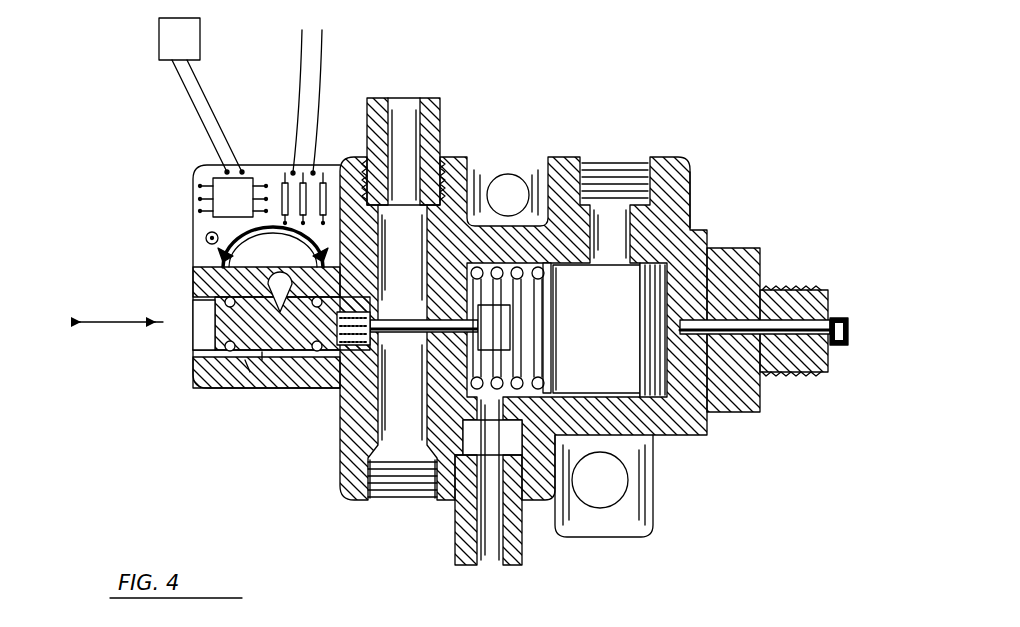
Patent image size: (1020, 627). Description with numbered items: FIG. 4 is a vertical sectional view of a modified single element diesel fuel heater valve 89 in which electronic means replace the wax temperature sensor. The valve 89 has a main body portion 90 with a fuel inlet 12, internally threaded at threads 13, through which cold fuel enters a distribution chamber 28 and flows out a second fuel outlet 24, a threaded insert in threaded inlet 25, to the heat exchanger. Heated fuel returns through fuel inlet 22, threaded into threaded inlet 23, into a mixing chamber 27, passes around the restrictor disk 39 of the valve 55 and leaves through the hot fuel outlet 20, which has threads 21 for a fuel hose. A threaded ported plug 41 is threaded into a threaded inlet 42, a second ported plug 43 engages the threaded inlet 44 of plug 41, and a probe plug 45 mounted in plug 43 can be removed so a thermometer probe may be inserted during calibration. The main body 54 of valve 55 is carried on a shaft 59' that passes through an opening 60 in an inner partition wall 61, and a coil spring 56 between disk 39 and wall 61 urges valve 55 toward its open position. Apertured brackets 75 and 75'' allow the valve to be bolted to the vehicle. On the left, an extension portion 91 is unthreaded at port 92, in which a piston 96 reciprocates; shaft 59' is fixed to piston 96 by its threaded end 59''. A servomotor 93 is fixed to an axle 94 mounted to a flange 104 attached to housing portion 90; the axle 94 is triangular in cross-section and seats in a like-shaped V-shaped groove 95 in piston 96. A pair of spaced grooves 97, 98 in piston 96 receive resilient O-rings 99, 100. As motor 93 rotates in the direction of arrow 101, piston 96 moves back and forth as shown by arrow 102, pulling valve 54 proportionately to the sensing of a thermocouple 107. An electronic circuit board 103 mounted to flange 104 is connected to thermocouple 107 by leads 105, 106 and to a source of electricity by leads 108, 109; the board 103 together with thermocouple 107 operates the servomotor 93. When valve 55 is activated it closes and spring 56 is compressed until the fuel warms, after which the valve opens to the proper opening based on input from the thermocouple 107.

The fuel inlet 12 is at (400, 502).
The internal threads 13 is at (375, 502).
The hot fuel outlet 20 is at (676, 160).
The threads 21 is at (590, 160).
The fuel inlet 22 is at (505, 566).
The threaded inlet 23 is at (456, 524).
The second fuel outlet 24 is at (441, 100).
The threaded inlet 25 is at (442, 148).
The mixing chamber 27 is at (602, 363).
The distribution chamber 28 is at (402, 179).
The restrictor disk 39 is at (553, 318).
The threaded ported plug 41 is at (746, 252).
The threaded inlet 42 is at (706, 426).
The second ported plug 43 is at (816, 292).
The threaded inlet 44 is at (772, 382).
The probe plug 45 is at (850, 330).
The main body of valve 54 is at (440, 327).
The valve 55 is at (552, 300).
The coil spring 56 is at (545, 495).
The shaft 59' is at (400, 267).
The threaded end 59'' is at (400, 392).
The opening 60 is at (426, 283).
The inner partition wall 61 is at (426, 370).
The apertured bracket 75 is at (606, 498).
The bracket 75'' is at (512, 167).
The valve 89 is at (728, 504).
The main body portion 90 is at (668, 205).
The extension portion 91 is at (200, 388).
The port 92 is at (216, 348).
The servomotor 93 is at (226, 298).
The axle 94 is at (266, 286).
The V-shaped groove 95 is at (200, 318).
The piston 96 is at (248, 360).
The groove 97 is at (312, 305).
The groove 98 is at (262, 360).
The O-ring 99 is at (226, 350).
The O-ring 100 is at (315, 352).
The arrow 101 is at (258, 240).
The arrow 102 is at (106, 328).
The electronic circuit board 103 is at (222, 178).
The flange 104 is at (208, 214).
The lead 105 is at (178, 72).
The lead 106 is at (198, 82).
The thermocouple 107 is at (160, 22).
The lead 108 is at (300, 40).
The lead 109 is at (322, 40).